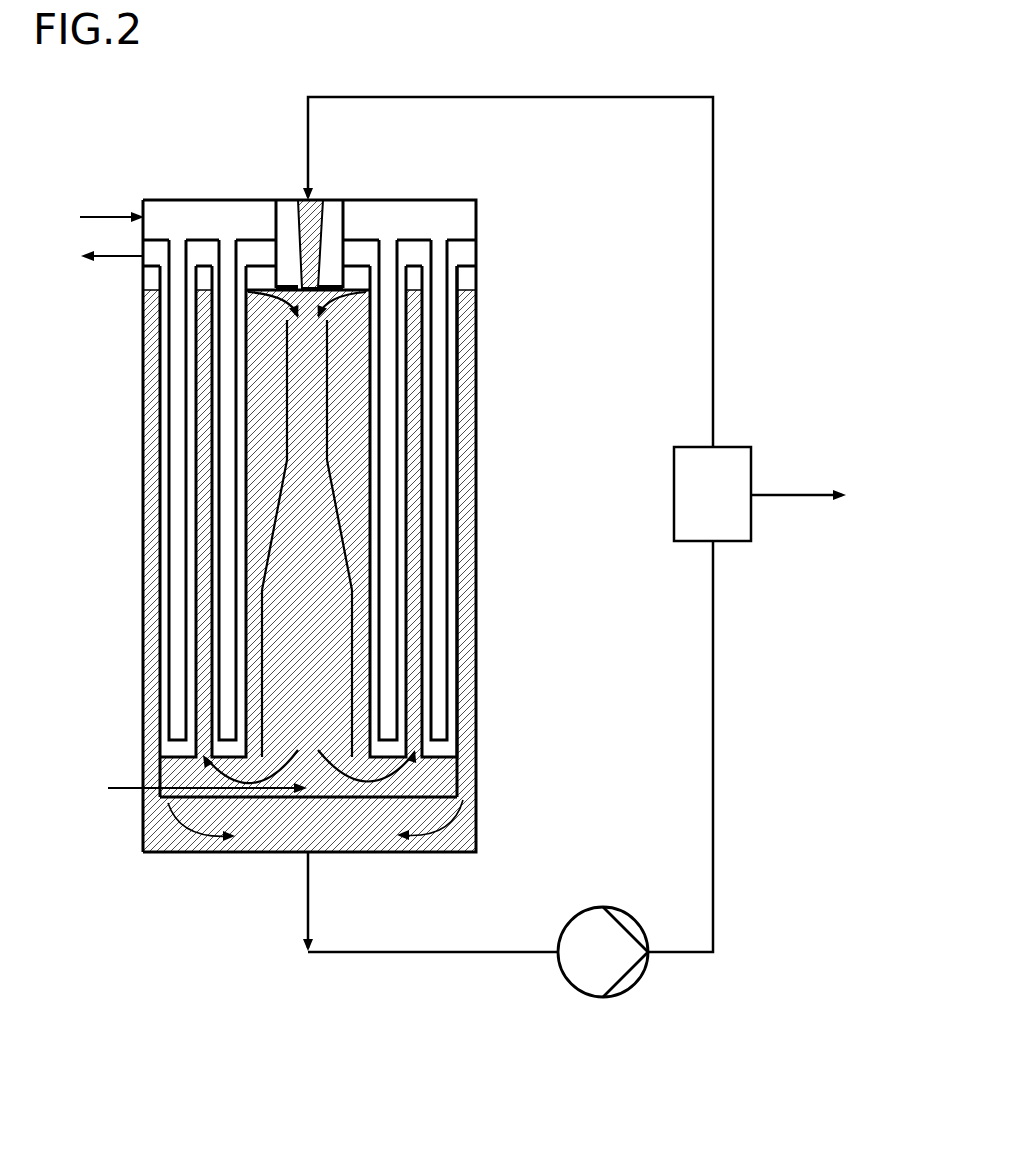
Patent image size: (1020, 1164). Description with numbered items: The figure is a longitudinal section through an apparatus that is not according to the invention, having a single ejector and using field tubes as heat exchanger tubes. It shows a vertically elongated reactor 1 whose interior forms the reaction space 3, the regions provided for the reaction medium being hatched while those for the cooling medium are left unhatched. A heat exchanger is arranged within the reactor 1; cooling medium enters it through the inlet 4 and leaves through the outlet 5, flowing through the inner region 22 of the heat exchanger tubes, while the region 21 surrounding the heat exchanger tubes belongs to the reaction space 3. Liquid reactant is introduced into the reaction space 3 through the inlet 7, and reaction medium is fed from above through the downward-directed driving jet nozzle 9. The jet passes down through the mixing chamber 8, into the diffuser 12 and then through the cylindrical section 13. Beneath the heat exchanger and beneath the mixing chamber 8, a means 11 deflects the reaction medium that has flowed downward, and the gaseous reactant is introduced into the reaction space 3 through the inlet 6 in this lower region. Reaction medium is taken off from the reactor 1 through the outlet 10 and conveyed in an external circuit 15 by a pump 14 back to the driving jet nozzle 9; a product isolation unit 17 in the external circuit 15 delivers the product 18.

The vertically elongated reactor 1 is at (193, 200).
The reaction space 3 is at (347, 318).
The inlet for introducing the cooling medium 4 is at (80, 217).
The outlet for taking off the cooling medium 5 is at (105, 260).
The inlet for introducing the gaseous reactant 6 is at (198, 792).
The inlet for introducing the liquid reactant 7 is at (294, 277).
The mixing chamber 8 is at (330, 385).
The downward-directed driving jet nozzle 9 is at (323, 228).
The outlet for taking off the reaction medium 10 is at (309, 915).
The means for deflecting the reaction medium 11 is at (408, 797).
The diffuser 12 is at (342, 525).
The cylindrical section 13 is at (355, 657).
The pump 14 is at (634, 913).
The external circuit 15 is at (715, 150).
The product isolation unit 17 is at (734, 447).
The product 18 is at (790, 492).
The region surrounding the heat exchanger tubes 21 is at (150, 440).
The inner region of the heat exchanger tubes 22 is at (163, 488).